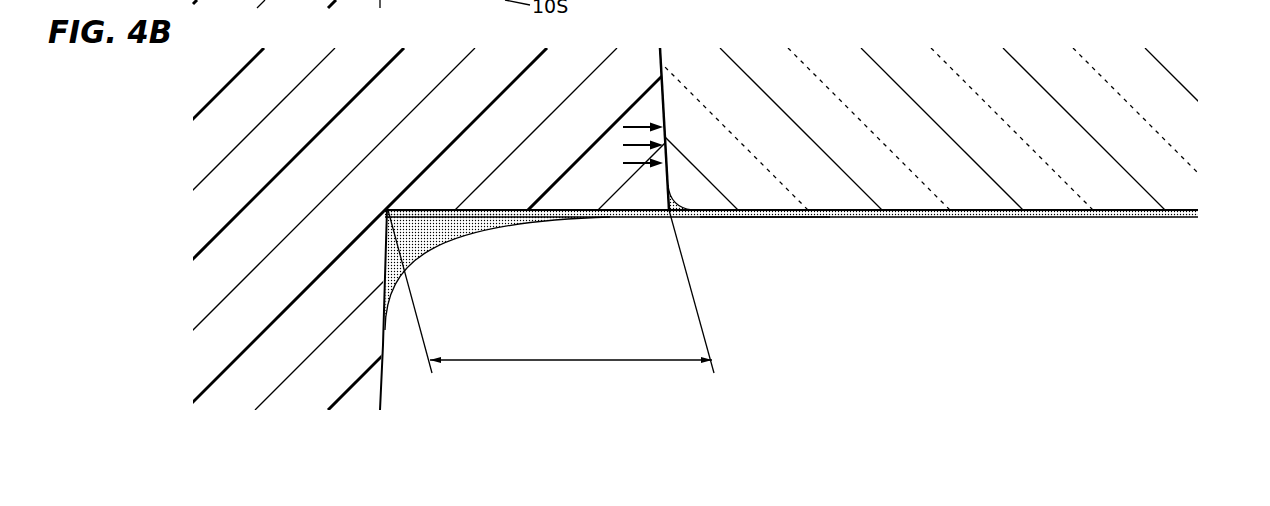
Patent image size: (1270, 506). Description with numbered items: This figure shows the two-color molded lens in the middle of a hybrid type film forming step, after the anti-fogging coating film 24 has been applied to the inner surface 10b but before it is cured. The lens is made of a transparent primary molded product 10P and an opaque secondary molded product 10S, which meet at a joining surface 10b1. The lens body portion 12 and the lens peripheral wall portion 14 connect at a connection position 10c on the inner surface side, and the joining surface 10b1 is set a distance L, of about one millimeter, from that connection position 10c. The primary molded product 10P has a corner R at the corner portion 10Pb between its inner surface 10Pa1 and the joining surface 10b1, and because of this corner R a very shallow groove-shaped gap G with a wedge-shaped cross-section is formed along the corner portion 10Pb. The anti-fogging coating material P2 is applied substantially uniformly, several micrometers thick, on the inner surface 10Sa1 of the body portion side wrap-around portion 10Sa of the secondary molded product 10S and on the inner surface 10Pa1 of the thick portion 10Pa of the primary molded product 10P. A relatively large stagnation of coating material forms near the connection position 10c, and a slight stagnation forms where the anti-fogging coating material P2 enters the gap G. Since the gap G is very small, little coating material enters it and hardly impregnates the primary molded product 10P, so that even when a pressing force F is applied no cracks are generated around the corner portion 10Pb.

The lens peripheral wall portion 14 is at (258, 300).
The primary molded product 10P is at (1079, 219).
The lens body portion 12 is at (1110, 140).
The joining surface 10b1 is at (666, 115).
The corner R is at (684, 194).
The groove-shaped gap G is at (681, 204).
The secondary molded product 10S is at (388, 378).
The connection position 10c is at (393, 212).
The body portion side wrap-around portion 10Sa is at (495, 143).
The inner surface 10Sa1 is at (585, 200).
The distance L is at (551, 291).
The pressing force F is at (635, 145).
The corner portion 10Pb is at (695, 198).
The anti-fogging coating material P2 is at (763, 219).
The anti-fogging coating film 24 is at (766, 289).
The inner surface 10Pa1 is at (863, 213).
The thick portion 10Pa is at (928, 143).
The inner surface 10b is at (1017, 212).